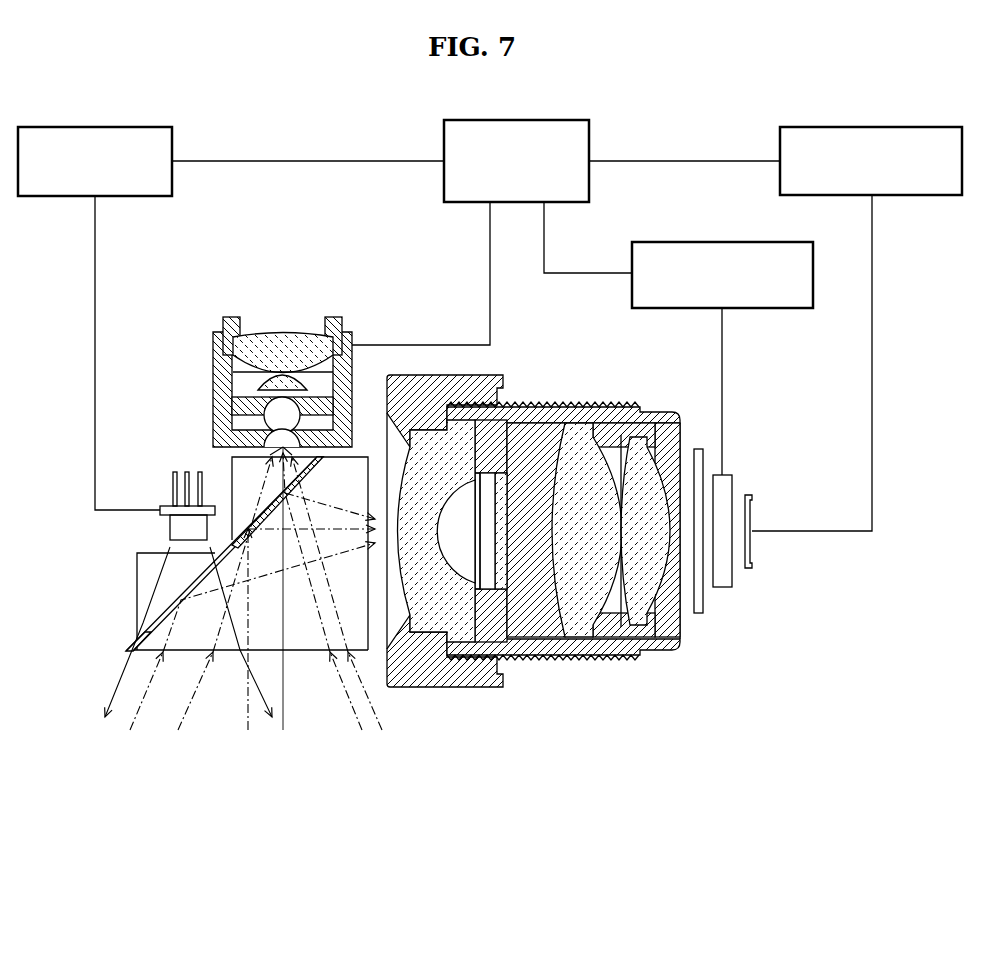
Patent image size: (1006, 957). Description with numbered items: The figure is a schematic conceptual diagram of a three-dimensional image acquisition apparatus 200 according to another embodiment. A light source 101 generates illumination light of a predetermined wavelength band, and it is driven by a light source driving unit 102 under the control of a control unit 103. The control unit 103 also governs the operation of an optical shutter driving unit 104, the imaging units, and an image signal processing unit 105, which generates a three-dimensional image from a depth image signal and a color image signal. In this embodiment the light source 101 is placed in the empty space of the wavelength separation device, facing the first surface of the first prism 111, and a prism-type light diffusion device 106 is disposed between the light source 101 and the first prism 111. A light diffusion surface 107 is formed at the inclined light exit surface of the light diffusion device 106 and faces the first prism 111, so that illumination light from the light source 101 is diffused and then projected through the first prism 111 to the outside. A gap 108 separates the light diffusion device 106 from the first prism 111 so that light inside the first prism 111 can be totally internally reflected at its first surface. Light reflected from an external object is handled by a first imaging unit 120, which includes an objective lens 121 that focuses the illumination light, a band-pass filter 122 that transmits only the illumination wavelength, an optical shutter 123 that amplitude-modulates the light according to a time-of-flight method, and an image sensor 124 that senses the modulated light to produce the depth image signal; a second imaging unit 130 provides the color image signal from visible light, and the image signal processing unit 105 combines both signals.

The light source 101 is at (168, 528).
The light source driving unit 102 is at (100, 126).
The control unit 103 is at (537, 120).
The optical shutter driving unit 104 is at (731, 242).
The image signal processing unit 105 is at (881, 127).
The prism-type light diffusion device 106 is at (140, 568).
The light diffusion surface 107 is at (183, 585).
The gap 108 is at (135, 637).
The first prism 111 is at (300, 652).
The first imaging unit 120 is at (533, 565).
The objective lens 121 is at (558, 662).
The band-pass filter 122 is at (698, 614).
The optical shutter 123 is at (723, 590).
The image sensor 124 is at (749, 570).
The second imaging unit 130 is at (214, 378).
The 3D image acquisition apparatus 200 is at (616, 759).